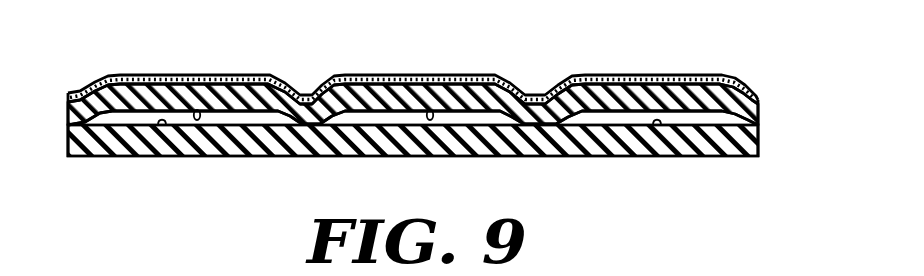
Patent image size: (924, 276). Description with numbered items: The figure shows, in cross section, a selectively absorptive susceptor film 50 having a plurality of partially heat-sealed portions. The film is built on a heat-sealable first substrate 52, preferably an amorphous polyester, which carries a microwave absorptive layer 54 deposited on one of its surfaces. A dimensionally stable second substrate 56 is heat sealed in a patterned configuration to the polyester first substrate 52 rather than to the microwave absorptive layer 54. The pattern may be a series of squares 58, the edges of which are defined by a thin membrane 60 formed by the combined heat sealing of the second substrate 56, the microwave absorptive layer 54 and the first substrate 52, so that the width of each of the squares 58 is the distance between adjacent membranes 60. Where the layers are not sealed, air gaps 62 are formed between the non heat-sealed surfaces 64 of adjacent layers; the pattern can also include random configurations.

The selectively absorptive susceptor film 50 is at (444, 98).
The first substrate 52 is at (758, 117).
The microwave absorptive layer 54 is at (747, 97).
The dimensionally stable second substrate 56 is at (758, 142).
The squares 58 is at (643, 78).
The thin membrane 60 is at (532, 96).
The air gaps 62 is at (240, 118).
The non heat-sealed surfaces 64 is at (197, 109).